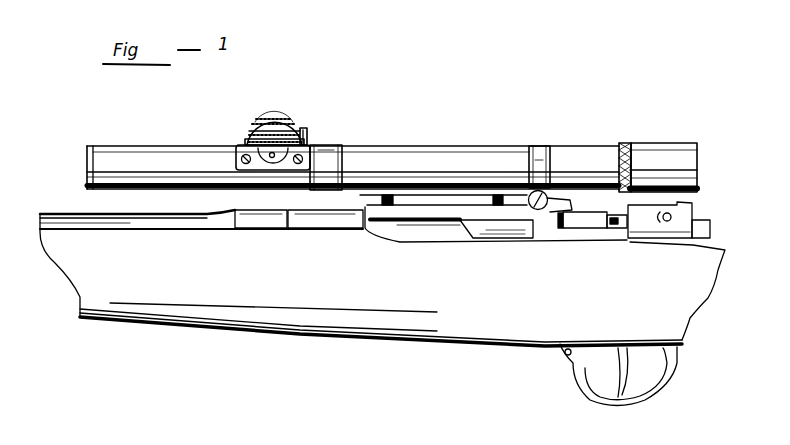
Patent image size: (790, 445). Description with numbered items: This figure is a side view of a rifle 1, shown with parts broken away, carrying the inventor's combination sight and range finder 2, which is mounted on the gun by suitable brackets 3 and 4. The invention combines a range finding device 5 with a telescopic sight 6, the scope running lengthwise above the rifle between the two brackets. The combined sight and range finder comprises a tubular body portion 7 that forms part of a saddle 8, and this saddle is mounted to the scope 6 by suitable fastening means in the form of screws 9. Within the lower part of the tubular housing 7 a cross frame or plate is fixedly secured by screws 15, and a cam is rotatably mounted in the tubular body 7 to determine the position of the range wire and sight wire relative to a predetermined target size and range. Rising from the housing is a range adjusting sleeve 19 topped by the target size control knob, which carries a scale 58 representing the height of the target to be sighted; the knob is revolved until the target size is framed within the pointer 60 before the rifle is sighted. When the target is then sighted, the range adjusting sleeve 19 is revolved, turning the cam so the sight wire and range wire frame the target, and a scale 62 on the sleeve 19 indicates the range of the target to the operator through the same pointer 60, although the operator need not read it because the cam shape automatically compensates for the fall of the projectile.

The rifle 1 is at (158, 298).
The combination sight and range finder 2 is at (417, 163).
The bracket 3 is at (543, 163).
The bracket 4 is at (335, 165).
The range finding device 5 is at (247, 131).
The telescopic sight 6 is at (137, 163).
The tubular body portion 7 is at (257, 125).
The saddle 8 is at (273, 157).
The screws 9 is at (240, 160).
The screws 15 is at (271, 158).
The range adjusting sleeve 19 is at (246, 141).
The scale 58 is at (283, 122).
The pointer 60 is at (302, 132).
The scale 62 is at (306, 134).